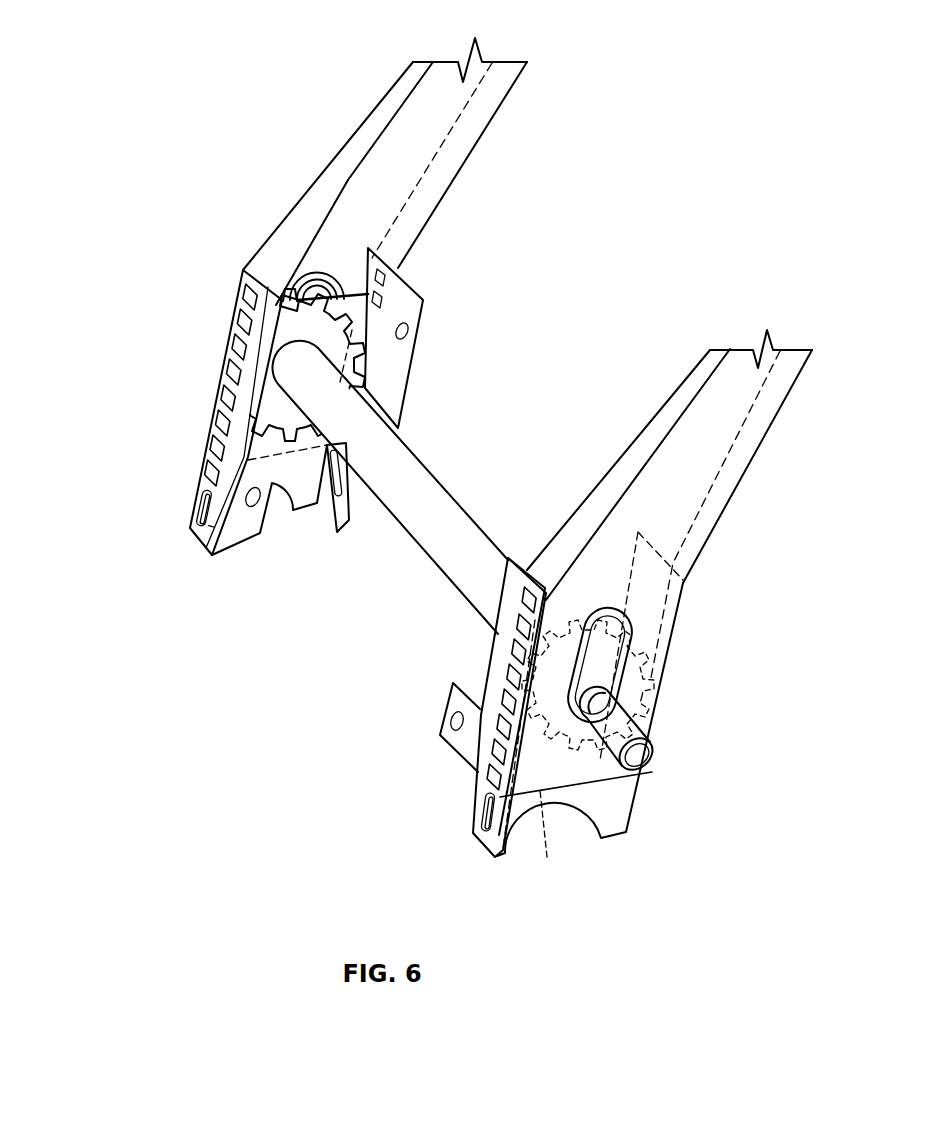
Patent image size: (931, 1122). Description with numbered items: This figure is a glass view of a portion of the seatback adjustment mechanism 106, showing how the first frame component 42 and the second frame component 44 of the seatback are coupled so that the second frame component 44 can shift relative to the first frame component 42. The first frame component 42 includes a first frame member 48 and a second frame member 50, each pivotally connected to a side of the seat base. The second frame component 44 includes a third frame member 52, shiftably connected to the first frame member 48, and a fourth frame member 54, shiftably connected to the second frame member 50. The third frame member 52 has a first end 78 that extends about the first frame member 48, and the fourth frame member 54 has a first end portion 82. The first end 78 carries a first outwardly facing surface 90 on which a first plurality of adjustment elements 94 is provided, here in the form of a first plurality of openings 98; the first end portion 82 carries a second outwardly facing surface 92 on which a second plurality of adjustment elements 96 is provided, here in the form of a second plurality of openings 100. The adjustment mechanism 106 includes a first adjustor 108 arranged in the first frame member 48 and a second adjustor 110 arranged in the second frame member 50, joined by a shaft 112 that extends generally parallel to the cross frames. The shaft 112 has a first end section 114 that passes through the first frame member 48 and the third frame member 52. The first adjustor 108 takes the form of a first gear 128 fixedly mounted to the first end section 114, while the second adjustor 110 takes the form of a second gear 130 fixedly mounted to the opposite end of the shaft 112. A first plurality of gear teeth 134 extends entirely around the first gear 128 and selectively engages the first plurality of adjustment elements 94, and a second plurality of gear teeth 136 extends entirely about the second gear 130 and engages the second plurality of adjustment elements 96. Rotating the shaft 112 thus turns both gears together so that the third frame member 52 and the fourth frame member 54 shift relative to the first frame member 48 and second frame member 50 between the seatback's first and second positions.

The first frame component 42 is at (187, 503).
The second frame component 44 is at (359, 127).
The first frame member 48 is at (480, 836).
The second frame member 50 is at (203, 540).
The third frame member 52 is at (693, 546).
The fourth frame member 54 is at (297, 222).
The first end 78 is at (622, 800).
The first end portion 82 is at (208, 457).
The first outwardly facing surface 90 is at (470, 747).
The second outwardly facing surface 92 is at (222, 378).
The first plurality of adjustment elements 94 is at (518, 618).
The second plurality of adjustment elements 96 is at (240, 305).
The first plurality of openings 98 is at (517, 655).
The second plurality of openings 100 is at (237, 337).
The adjustment mechanism 106 is at (373, 525).
The first adjustor 108 is at (636, 697).
The second adjustor 110 is at (340, 280).
The shaft 112 is at (430, 487).
The first end section 114 is at (647, 754).
The first gear 128 is at (547, 857).
The second gear 130 is at (305, 298).
The first plurality of gear teeth 134 is at (505, 862).
The second plurality of gear teeth 136 is at (283, 290).